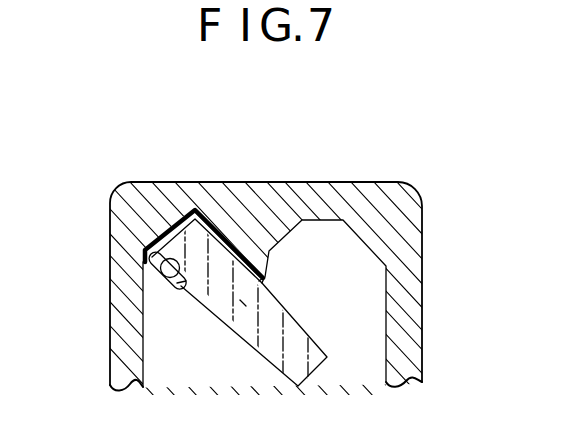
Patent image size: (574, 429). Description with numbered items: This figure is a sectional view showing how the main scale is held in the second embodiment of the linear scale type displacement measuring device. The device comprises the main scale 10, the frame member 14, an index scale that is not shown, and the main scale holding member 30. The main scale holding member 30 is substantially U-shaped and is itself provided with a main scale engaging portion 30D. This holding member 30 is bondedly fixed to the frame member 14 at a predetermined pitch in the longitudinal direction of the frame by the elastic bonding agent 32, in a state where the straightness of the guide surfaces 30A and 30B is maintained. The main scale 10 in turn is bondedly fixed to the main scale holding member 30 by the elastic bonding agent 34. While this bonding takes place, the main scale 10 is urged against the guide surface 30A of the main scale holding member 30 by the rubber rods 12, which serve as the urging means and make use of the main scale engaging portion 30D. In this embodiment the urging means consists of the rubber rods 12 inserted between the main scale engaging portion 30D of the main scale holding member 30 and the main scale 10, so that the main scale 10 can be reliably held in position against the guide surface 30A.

The main scale 10 is at (319, 372).
The rubber rods 12 is at (180, 276).
The frame member 14 is at (422, 350).
The main scale holding member 30 is at (266, 284).
The guide surface 30A is at (270, 250).
The guide surface 30B is at (146, 252).
The main scale engaging portion 30D is at (177, 283).
The elastic bonding agent 32 is at (265, 282).
The elastic bonding agent 34 is at (232, 330).